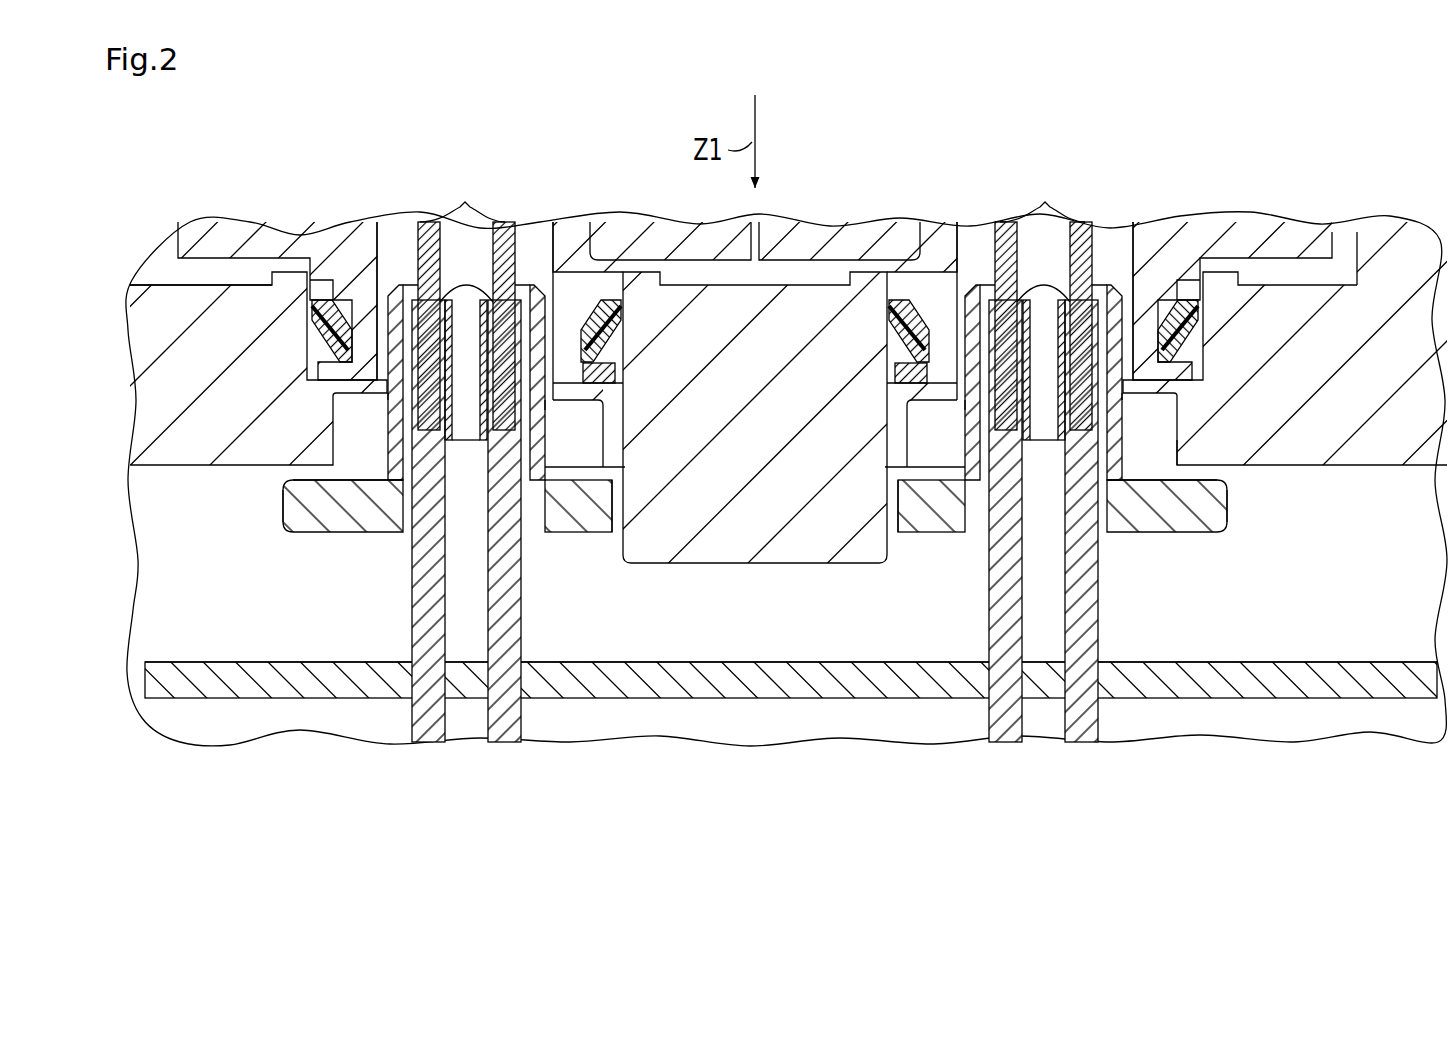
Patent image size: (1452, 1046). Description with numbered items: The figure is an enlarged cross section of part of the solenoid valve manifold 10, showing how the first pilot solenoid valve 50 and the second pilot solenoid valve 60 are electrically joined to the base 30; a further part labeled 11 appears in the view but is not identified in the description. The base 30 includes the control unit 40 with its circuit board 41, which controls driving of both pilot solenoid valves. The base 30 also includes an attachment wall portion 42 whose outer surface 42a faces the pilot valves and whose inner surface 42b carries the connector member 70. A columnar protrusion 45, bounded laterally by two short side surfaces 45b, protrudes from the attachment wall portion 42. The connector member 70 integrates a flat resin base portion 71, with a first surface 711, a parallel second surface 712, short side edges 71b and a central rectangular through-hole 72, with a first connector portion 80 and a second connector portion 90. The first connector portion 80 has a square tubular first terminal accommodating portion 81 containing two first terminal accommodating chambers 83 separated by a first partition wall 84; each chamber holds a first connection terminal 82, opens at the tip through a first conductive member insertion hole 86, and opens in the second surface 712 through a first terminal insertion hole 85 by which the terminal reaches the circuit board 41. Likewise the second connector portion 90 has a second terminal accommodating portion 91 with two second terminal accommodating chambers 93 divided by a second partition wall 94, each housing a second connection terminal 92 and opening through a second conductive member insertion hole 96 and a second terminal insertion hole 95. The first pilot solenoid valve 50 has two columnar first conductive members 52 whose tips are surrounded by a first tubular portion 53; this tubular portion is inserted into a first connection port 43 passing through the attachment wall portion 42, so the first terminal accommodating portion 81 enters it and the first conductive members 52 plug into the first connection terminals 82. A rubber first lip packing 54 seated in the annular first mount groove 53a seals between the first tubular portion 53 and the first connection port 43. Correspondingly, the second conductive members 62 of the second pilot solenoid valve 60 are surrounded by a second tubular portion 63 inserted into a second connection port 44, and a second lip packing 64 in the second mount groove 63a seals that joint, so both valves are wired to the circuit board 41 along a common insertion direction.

The solenoid valve manifold 10 is at (1378, 205).
The housing side wall 11 is at (1418, 240).
The base 30 is at (160, 278).
The control unit 40 is at (1357, 634).
The circuit board 41 is at (1262, 665).
The attachment wall portion 42 is at (175, 468).
The outer surface 42a is at (800, 262).
The inner surface 42b is at (1340, 468).
The first connection port 43 is at (333, 272).
The second connection port 44 is at (1180, 272).
The protrusion 45 is at (720, 565).
The short side surfaces 45b is at (612, 532).
The first pilot solenoid valve 50 is at (203, 222).
The first conductive members 52 is at (462, 192).
The first tubular portion 53 is at (322, 337).
The first mount groove 53a is at (622, 352).
The first lip packing 54 is at (308, 322).
The second pilot solenoid valve 60 is at (1283, 225).
The second conductive members 62 is at (1042, 192).
The second tubular portion 63 is at (1197, 345).
The second mount groove 63a is at (888, 352).
The second lip packing 64 is at (1197, 330).
The connector member 70 is at (291, 541).
The base portion 71 is at (333, 534).
The short side edges 71b is at (283, 506).
The through-hole 72 is at (888, 497).
The first connector portion 80 is at (393, 289).
The first terminal accommodating portion 81 is at (553, 265).
The first connection terminal 82 is at (395, 393).
The first terminal accommodating chambers 83 is at (466, 283).
The first partition wall 84 is at (467, 520).
The first terminal insertion hole 85 is at (422, 533).
The first conductive member insertion holes 86 is at (430, 290).
The second connector portion 90 is at (1117, 289).
The second terminal accommodating portion 91 is at (957, 265).
The second connection terminals 92 is at (992, 410).
The second terminal accommodating chambers 93 is at (1044, 283).
The second partition wall 94 is at (1043, 520).
The second terminal insertion hole 95 is at (1000, 532).
The second conductive member insertion holes 96 is at (1005, 292).
The first surface 711 is at (1190, 465).
The second surface 712 is at (1168, 534).